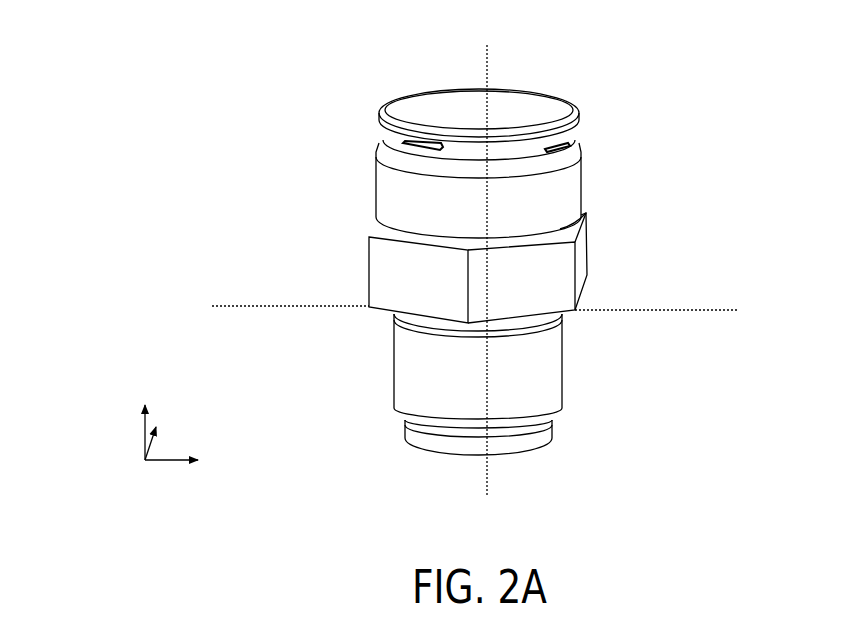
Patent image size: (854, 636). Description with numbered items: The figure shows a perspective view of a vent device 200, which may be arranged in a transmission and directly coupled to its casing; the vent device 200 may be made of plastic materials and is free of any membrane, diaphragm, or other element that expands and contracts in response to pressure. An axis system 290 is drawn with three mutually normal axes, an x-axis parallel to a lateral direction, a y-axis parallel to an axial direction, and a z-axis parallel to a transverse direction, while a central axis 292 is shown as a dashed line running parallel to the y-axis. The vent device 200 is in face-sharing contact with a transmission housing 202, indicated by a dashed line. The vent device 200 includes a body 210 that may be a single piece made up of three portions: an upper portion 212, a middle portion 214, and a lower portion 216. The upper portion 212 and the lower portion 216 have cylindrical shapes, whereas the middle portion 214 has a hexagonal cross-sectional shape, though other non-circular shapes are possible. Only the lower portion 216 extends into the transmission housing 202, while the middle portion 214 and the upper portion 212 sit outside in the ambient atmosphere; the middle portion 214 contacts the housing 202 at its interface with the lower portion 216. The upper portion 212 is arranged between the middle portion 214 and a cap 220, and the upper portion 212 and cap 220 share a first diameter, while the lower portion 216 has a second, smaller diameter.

The vent device 200 is at (682, 41).
The transmission housing 202 is at (272, 304).
The body 210 is at (354, 346).
The upper portion 212 is at (581, 184).
The middle portion 214 is at (588, 258).
The lower portion 216 is at (563, 372).
The cap 220 is at (395, 110).
The axis system 290 is at (127, 367).
The central axis 292 is at (486, 473).